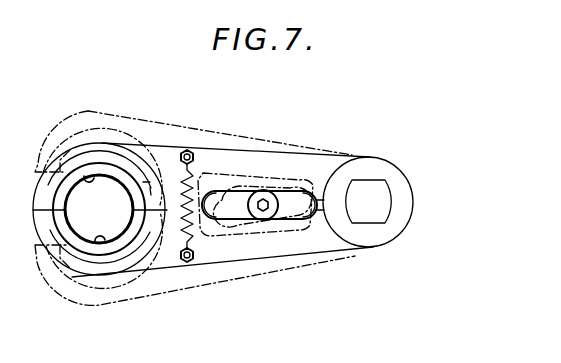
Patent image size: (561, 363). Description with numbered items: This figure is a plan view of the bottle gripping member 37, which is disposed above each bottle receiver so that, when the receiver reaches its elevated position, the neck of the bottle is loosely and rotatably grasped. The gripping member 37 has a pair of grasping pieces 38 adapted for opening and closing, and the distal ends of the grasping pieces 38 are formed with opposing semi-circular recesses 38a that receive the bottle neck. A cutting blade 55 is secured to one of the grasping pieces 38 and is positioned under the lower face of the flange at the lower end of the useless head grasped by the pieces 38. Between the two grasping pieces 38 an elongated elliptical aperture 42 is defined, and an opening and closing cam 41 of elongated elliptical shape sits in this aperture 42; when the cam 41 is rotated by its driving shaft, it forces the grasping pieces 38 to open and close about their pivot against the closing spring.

The bottle gripping member 37 is at (204, 130).
The grasping pieces 38 is at (232, 158).
The semi-circular recesses 38a is at (84, 176).
The opening and closing cam 41 is at (290, 184).
The elongated elliptical aperture 42 is at (311, 247).
The cutting blade 55 is at (143, 182).